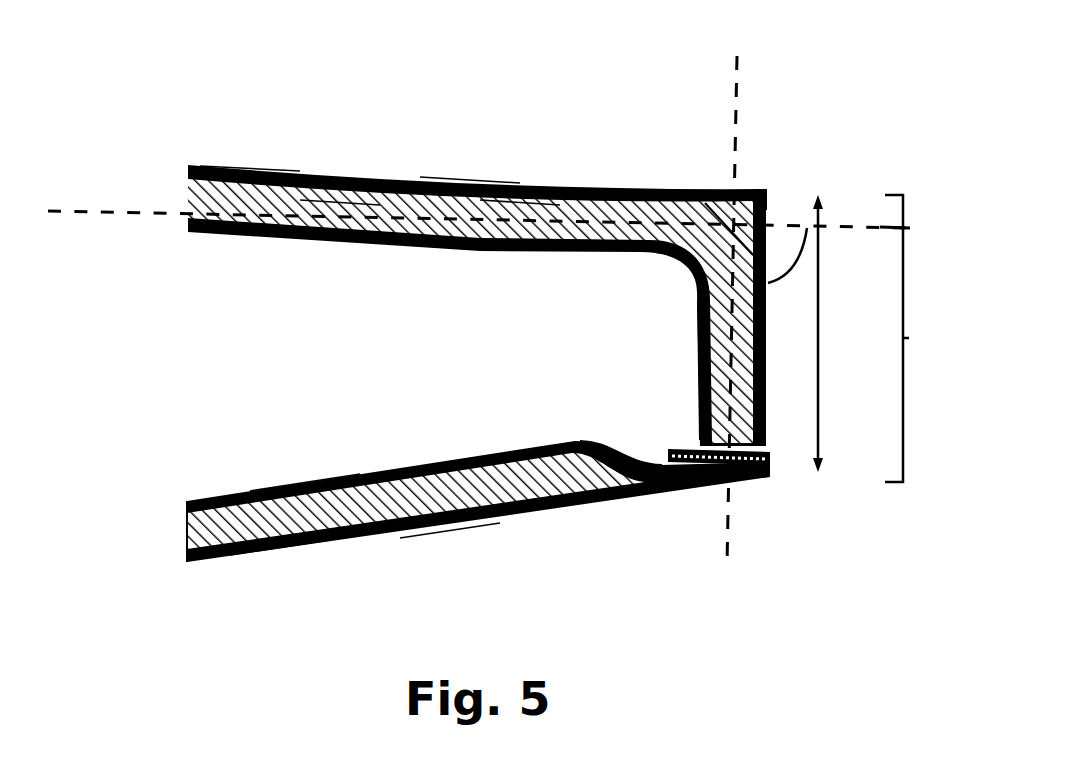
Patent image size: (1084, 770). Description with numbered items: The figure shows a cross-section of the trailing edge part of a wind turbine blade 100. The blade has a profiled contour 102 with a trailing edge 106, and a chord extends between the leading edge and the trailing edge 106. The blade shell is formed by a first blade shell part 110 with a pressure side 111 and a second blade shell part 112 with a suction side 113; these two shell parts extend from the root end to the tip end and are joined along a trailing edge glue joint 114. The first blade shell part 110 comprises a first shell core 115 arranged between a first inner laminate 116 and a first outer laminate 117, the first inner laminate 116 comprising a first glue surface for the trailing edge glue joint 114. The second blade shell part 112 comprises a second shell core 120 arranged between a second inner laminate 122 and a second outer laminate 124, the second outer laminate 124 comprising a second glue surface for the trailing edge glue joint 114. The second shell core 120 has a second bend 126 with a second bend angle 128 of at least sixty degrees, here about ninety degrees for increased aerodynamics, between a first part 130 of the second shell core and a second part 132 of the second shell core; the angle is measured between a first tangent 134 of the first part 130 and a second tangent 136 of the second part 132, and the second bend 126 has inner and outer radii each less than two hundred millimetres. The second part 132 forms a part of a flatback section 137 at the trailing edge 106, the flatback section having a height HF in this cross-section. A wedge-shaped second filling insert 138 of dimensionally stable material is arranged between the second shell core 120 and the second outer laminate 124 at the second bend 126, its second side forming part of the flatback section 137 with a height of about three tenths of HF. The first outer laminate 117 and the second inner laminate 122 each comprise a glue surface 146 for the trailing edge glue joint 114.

The wind turbine blade 100 is at (436, 68).
The profiled contour 102 is at (705, 188).
The trailing edge 106 is at (766, 352).
The first blade shell part 110 is at (555, 497).
The pressure side 111 is at (445, 522).
The second blade shell part 112 is at (340, 196).
The suction side 113 is at (478, 182).
The trailing edge glue joint 114 is at (667, 462).
The first shell core 115 is at (188, 522).
The first inner laminate 116 is at (300, 482).
The first outer laminate 117 is at (275, 548).
The second shell core 120 is at (188, 192).
The second inner laminate 122 is at (350, 255).
The second outer laminate 124 is at (232, 165).
The second bend 126 is at (663, 262).
The second bend angle 128 is at (805, 268).
The first part of the second shell core 130 is at (520, 190).
The second part of the second shell core 132 is at (695, 322).
The first tangent 134 is at (870, 227).
The second tangent 136 is at (738, 65).
The flatback section 137 is at (909, 338).
The second filling insert 138 is at (760, 192).
The glue surface 146 is at (697, 443).
The height of the flatback section HF is at (820, 456).